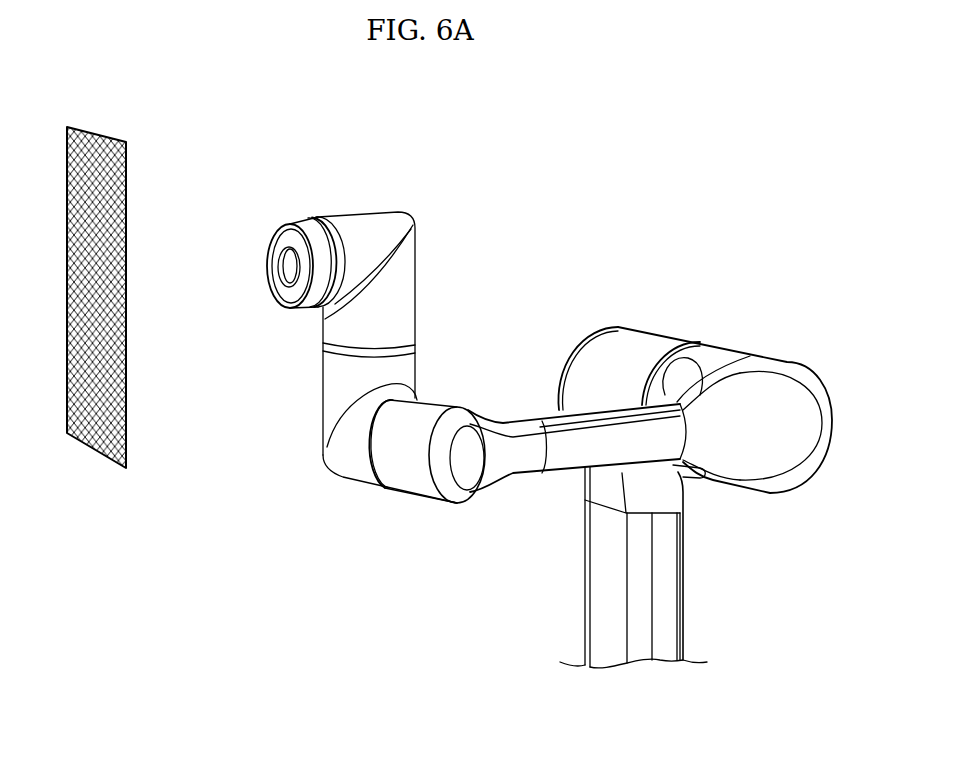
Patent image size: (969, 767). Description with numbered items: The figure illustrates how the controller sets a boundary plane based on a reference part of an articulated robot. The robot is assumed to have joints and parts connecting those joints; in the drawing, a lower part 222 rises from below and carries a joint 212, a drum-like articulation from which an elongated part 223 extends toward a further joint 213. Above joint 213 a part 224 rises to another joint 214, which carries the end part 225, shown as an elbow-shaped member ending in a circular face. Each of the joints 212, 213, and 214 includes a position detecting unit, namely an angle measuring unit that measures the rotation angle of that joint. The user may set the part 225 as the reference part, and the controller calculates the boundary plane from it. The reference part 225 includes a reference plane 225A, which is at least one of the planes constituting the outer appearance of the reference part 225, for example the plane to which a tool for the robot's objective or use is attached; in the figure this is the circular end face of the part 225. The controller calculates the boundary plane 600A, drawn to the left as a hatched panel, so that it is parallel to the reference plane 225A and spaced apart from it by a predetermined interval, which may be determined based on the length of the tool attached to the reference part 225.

The boundary plane 600A is at (100, 136).
The reference plane 225A is at (284, 259).
The reference part 225 is at (407, 280).
The joint 214 is at (405, 348).
The part 224 is at (407, 372).
The joint 213 is at (371, 478).
The part 223 is at (561, 458).
The joint 212 is at (661, 360).
The part 222 is at (672, 588).